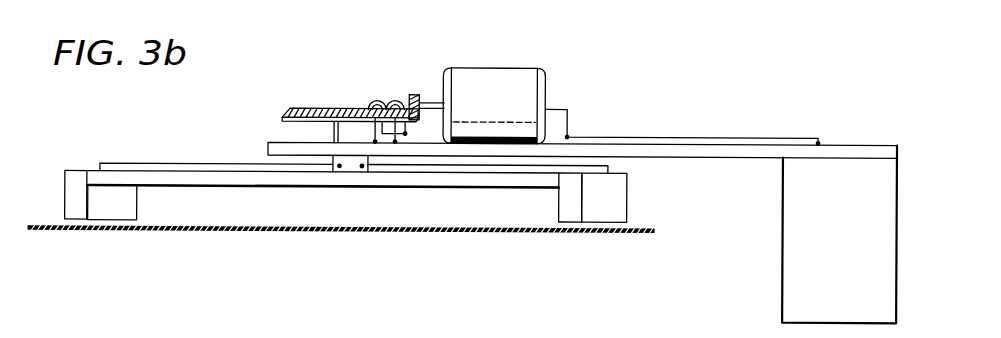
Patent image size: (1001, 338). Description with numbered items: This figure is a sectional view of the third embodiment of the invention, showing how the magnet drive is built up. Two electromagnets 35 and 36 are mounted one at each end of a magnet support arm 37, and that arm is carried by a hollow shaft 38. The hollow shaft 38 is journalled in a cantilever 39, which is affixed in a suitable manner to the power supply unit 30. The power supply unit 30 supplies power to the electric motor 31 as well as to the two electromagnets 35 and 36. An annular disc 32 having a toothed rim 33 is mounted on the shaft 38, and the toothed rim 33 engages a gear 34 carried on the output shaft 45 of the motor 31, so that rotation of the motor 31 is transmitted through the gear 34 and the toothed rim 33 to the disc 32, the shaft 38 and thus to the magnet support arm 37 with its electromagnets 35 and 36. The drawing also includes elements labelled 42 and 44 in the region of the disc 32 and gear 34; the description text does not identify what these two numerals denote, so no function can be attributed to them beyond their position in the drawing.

The power supply unit 30 is at (857, 167).
The electric motor 31 is at (515, 74).
The annular disc 32 is at (285, 111).
The toothed rim 33 is at (320, 109).
The gear 34 is at (412, 90).
The electromagnet 35 is at (110, 202).
The electromagnet 36 is at (610, 200).
The magnet support arm 37 is at (208, 175).
The hollow shaft 38 is at (336, 133).
The cantilever 39 is at (627, 148).
The coil loop 42 is at (406, 97).
The coil loop 44 is at (370, 100).
The output shaft 45 is at (433, 100).